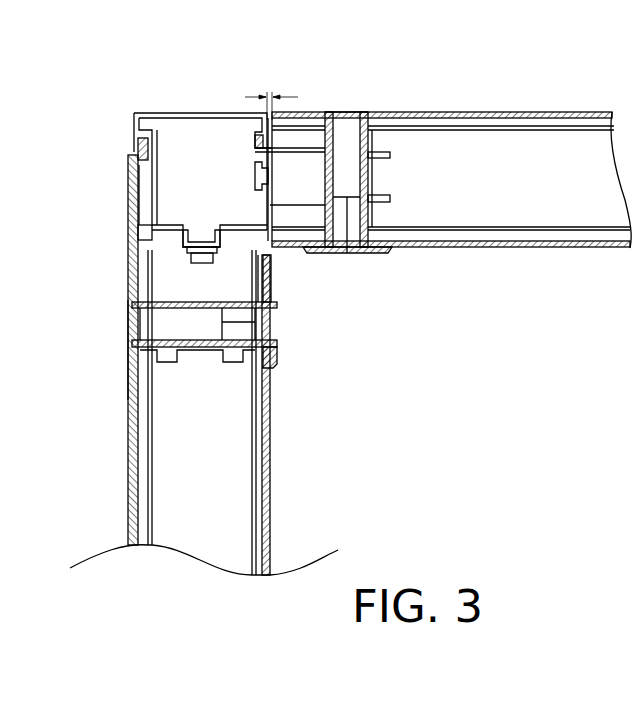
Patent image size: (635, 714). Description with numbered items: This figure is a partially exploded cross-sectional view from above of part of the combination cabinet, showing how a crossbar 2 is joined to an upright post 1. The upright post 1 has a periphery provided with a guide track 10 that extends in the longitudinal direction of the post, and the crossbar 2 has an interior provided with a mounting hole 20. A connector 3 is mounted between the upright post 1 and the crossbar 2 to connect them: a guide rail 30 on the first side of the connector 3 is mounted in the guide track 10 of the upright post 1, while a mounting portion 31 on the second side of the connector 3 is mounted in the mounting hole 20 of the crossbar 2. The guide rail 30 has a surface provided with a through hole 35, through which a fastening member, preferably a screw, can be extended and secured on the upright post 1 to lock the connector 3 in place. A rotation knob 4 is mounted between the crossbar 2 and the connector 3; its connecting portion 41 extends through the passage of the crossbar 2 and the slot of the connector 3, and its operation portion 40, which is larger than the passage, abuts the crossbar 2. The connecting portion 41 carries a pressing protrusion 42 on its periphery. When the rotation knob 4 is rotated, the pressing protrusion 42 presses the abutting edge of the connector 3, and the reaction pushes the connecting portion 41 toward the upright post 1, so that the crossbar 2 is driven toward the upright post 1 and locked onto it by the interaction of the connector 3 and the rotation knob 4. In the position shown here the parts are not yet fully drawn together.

The upright post 1 is at (188, 112).
The crossbar 2 is at (445, 112).
The connector 3 is at (178, 277).
The rotation knob 4 is at (348, 253).
The guide track 10 is at (258, 140).
The mounting hole 20 is at (297, 143).
The guide rail 30 is at (148, 237).
The mounting portion 31 is at (262, 260).
The through hole 35 is at (200, 258).
The operation portion 40 is at (383, 255).
The connecting portion 41 is at (365, 118).
The pressing protrusion 42 is at (130, 352).